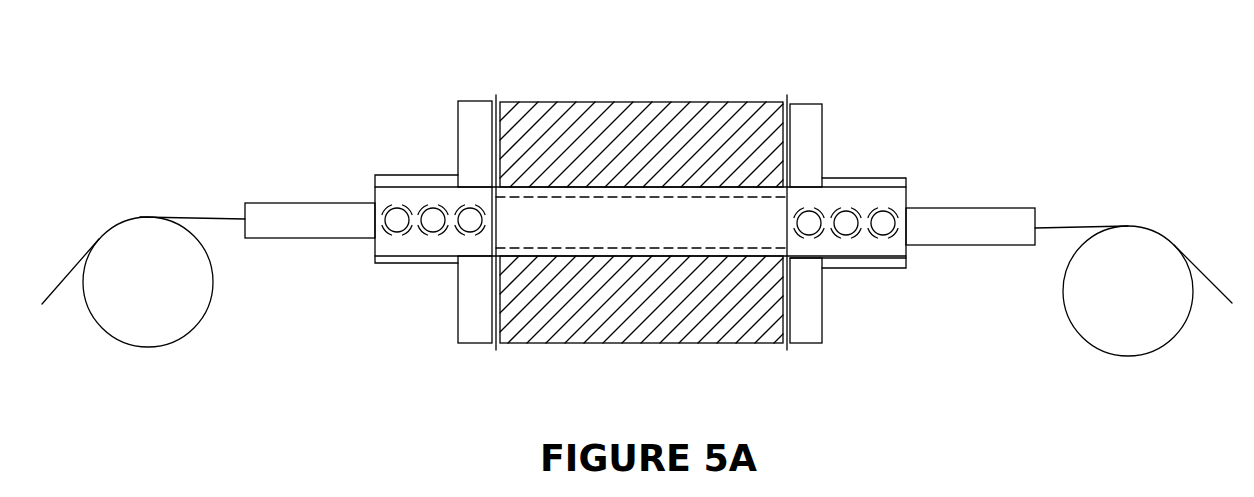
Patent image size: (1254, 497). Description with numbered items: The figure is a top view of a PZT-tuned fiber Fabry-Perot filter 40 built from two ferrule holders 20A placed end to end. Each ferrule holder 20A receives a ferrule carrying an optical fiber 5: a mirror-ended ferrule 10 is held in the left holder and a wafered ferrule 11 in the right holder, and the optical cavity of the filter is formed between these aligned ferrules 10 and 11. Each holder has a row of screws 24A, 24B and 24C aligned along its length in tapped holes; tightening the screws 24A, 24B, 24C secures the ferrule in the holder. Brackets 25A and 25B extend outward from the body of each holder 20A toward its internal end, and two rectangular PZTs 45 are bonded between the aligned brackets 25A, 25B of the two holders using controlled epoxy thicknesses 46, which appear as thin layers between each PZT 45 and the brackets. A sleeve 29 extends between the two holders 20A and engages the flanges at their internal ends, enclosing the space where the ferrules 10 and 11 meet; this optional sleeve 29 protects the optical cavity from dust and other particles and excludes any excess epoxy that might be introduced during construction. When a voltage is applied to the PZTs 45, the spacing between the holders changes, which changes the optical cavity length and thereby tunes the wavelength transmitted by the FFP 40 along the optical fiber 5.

The optical fiber 5 is at (1090, 228).
The mirror-ended ferrule 10 is at (318, 238).
The wafered ferrule 11 is at (1005, 208).
The ferrule holder 20A is at (355, 328).
The screw 24A is at (397, 220).
The screw 24B is at (433, 220).
The screw 24C is at (470, 220).
The bracket 25A is at (475, 117).
The bracket 25B is at (476, 310).
The sleeve 29 is at (750, 250).
The PZT-tuned FFP 40 is at (247, 69).
The rectangular PZT 45 is at (658, 137).
The controlled epoxy thickness 46 is at (498, 100).